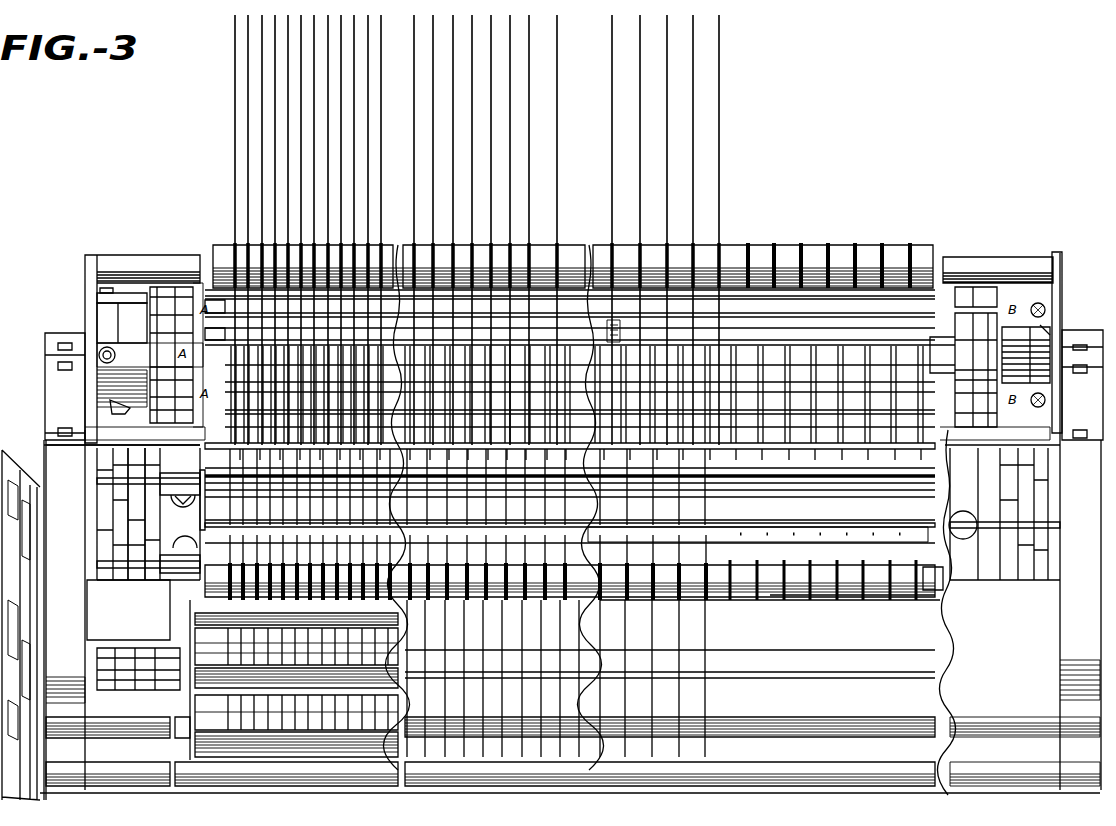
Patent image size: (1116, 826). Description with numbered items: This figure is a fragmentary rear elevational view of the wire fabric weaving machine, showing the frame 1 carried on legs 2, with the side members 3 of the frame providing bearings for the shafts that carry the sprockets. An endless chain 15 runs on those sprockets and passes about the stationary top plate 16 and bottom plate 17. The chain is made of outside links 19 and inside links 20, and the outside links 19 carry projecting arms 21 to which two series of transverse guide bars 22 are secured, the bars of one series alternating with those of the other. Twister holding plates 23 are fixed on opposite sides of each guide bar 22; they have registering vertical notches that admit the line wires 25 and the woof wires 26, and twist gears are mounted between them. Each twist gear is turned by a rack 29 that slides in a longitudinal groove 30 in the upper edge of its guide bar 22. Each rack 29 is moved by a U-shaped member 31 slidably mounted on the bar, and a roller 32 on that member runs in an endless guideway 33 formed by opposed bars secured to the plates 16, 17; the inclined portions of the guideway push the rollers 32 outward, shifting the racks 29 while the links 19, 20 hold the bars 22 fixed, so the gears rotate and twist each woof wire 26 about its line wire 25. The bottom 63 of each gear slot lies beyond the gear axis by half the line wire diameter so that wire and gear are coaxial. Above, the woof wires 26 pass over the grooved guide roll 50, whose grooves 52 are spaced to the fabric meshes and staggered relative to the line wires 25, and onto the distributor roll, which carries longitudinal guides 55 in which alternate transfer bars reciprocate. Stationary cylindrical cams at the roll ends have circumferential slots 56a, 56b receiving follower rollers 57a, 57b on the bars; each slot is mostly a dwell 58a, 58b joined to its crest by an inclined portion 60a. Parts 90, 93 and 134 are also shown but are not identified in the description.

The frame 1 is at (1060, 682).
The legs 2 is at (86, 705).
The side members 3 is at (52, 455).
The endless chain 15 is at (100, 545).
The top plate 16 is at (200, 510).
The bottom plate 17 is at (770, 616).
The outside links 19 is at (100, 570).
The inside links 20 is at (120, 515).
The projecting arms 21 is at (880, 582).
The guide bars 22 is at (708, 535).
The twister holding plates 23 is at (770, 470).
The line wires 25 is at (712, 624).
The woof wires 26 is at (722, 122).
The rack 29 is at (710, 488).
The longitudinal groove 30 is at (97, 480).
The U-shaped member 31 is at (960, 555).
The roller 32 is at (190, 476).
The guideway 33 is at (175, 449).
The guide roll 50 is at (935, 242).
The grooves 52 is at (775, 258).
The longitudinal guides 55 is at (975, 245).
The circumferential cam slot 56a is at (97, 322).
The circumferential cam slot 56b is at (1050, 335).
The follower roller 57a is at (97, 302).
The follower roller 57b is at (1050, 335).
The dwell 58a is at (135, 318).
The dwell 58b is at (1028, 342).
The inclined slot portion 60a is at (110, 408).
The slot bottom 63 is at (1000, 300).
The lower rail 90 is at (215, 745).
The bar 93 is at (820, 528).
The support 134 is at (1005, 514).